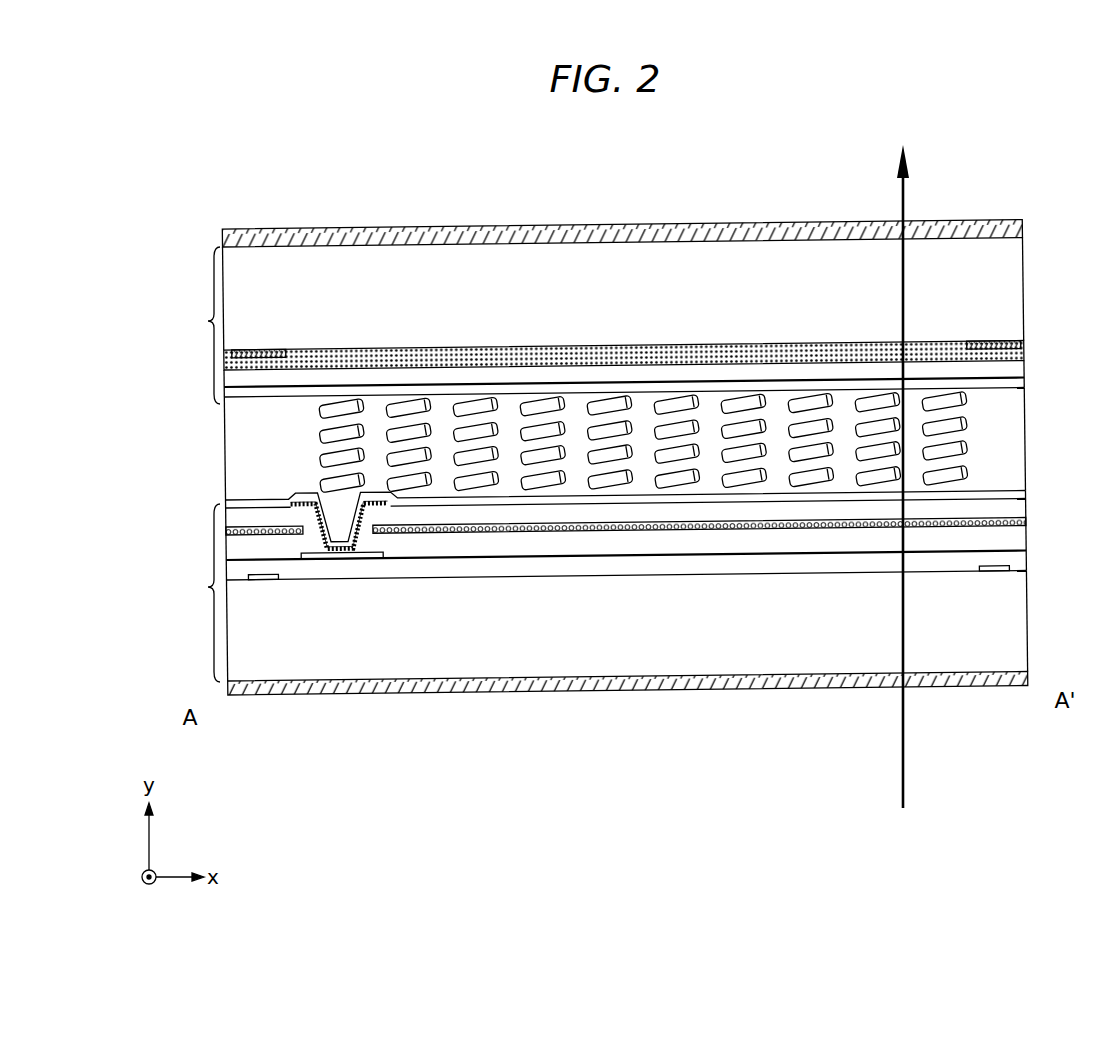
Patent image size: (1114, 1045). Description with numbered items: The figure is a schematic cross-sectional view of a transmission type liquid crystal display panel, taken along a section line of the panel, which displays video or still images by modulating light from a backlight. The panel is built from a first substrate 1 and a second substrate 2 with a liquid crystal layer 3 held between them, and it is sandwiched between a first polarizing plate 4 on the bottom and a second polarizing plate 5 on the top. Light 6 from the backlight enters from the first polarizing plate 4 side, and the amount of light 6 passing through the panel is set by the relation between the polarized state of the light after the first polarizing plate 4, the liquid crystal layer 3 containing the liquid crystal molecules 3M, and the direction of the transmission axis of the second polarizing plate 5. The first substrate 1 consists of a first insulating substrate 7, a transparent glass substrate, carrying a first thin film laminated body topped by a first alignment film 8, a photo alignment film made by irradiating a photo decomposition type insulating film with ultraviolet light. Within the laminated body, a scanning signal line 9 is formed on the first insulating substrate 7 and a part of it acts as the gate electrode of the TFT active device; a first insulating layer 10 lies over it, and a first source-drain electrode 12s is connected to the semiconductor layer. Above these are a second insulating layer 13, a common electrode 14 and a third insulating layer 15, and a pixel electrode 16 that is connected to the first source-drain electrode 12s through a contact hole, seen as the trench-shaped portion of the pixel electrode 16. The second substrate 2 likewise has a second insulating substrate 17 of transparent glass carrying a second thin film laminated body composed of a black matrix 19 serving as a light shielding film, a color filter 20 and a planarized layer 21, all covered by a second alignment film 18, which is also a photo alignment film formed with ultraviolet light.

The first substrate 1 is at (205, 593).
The second substrate 2 is at (205, 325).
The liquid crystal layer 3 is at (232, 447).
The liquid crystal molecules 3M is at (410, 405).
The first polarizing plate 4 is at (951, 690).
The second polarizing plate 5 is at (406, 228).
The light 6 is at (910, 800).
The first insulating substrate 7 is at (483, 630).
The first alignment film 8 is at (1020, 493).
The scanning signal line 9 is at (260, 582).
The first insulating layer 10 is at (729, 567).
The first source-drain electrode 12s is at (335, 562).
The second insulating layer 13 is at (541, 548).
The common electrode 14 is at (822, 531).
The third insulating layer 15 is at (631, 513).
The pixel electrode 16 is at (357, 542).
The second insulating substrate 17 is at (340, 298).
The second alignment film 18 is at (1020, 385).
The black matrix 19 is at (258, 350).
The color filter 20 is at (497, 340).
The planarized layer 21 is at (600, 373).